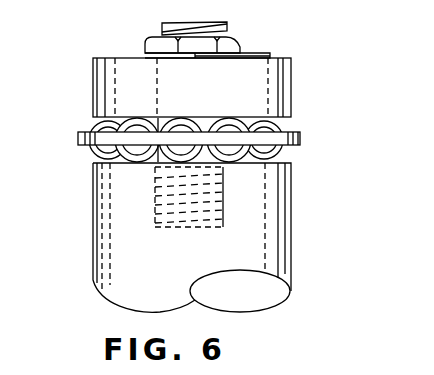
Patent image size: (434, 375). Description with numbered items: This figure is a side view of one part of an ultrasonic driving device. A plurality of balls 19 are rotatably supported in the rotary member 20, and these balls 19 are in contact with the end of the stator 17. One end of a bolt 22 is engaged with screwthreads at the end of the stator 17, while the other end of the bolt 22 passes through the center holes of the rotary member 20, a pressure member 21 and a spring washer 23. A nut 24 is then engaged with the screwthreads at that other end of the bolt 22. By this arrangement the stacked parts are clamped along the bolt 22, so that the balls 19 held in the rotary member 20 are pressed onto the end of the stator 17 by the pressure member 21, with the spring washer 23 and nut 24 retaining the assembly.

The stator 17 is at (273, 232).
The balls 19 is at (278, 150).
The rotary member 20 is at (300, 142).
The pressure member 21 is at (276, 85).
The bolt 22 is at (227, 25).
The spring washer 23 is at (243, 56).
The nut 24 is at (145, 43).